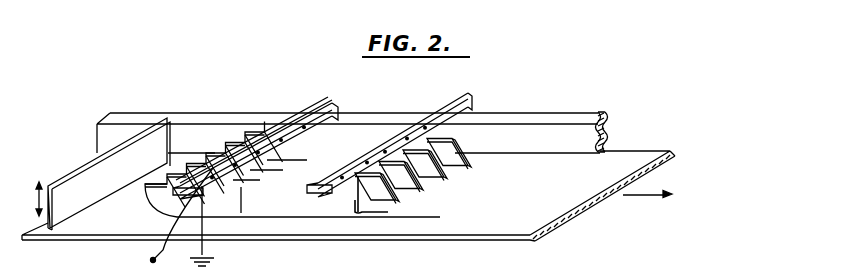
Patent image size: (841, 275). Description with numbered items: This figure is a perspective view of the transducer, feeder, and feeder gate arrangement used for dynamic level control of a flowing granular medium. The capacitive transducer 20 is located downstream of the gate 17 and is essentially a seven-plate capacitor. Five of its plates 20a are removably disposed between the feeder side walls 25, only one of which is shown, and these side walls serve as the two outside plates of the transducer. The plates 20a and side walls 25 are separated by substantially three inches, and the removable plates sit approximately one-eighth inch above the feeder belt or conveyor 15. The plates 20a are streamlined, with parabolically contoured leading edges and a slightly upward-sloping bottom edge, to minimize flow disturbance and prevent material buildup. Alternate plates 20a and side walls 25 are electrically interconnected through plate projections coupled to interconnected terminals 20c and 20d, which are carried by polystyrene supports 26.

The feeder belt or conveyor 15 is at (528, 209).
The gate 17 is at (75, 183).
The capacitive transducer 20 is at (290, 210).
The plates 20a is at (470, 165).
The terminal 20c is at (206, 196).
The terminal 20d is at (254, 143).
The feeder side walls 25 is at (552, 112).
The polystyrene supports 26 is at (326, 105).